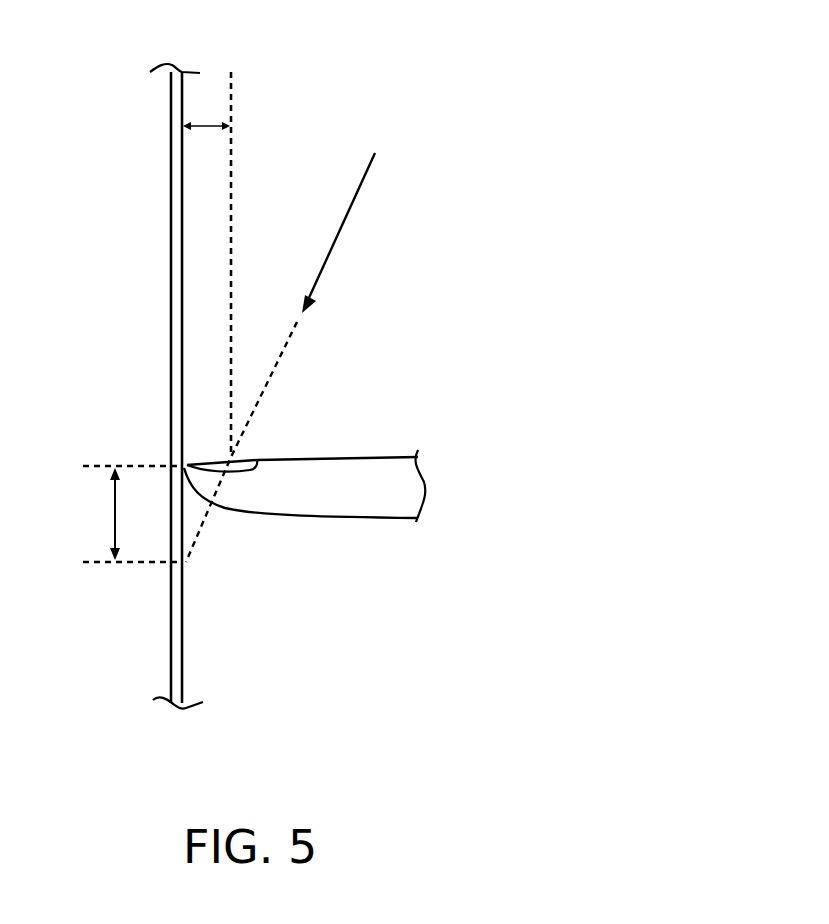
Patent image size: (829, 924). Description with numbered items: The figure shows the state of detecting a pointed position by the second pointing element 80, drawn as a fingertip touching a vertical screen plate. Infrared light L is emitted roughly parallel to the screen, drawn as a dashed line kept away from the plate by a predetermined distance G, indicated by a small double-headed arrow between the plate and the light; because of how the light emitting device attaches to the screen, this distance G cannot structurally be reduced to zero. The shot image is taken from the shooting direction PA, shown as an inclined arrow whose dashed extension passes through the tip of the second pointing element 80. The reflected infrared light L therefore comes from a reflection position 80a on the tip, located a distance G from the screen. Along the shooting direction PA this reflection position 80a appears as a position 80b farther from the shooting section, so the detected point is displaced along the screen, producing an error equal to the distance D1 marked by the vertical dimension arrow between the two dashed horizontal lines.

The second pointing element 80 is at (337, 475).
The reflection position 80a is at (229, 457).
The position 80b is at (185, 563).
The distance G is at (205, 128).
The infrared light L is at (232, 100).
The shooting direction PA is at (301, 357).
The distance D1 is at (98, 514).